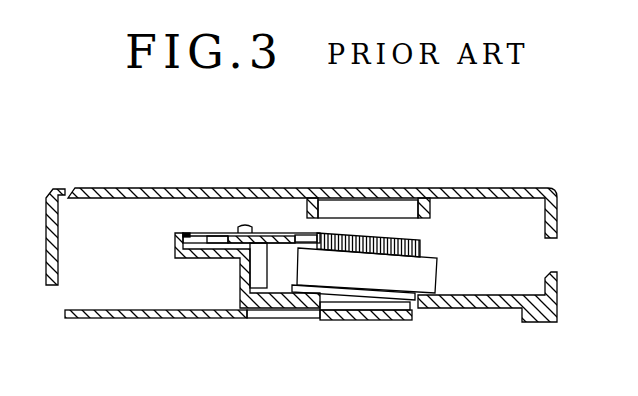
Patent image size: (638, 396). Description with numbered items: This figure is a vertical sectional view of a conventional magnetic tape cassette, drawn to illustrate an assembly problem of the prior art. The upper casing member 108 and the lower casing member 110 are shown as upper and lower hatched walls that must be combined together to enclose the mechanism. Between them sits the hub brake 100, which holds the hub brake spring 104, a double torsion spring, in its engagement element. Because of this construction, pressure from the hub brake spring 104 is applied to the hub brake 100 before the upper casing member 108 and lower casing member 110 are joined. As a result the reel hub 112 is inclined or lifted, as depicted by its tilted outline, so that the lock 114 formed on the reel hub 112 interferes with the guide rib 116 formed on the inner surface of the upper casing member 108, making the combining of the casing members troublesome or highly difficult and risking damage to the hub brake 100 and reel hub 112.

The hub brake 100 is at (277, 233).
The hub brake spring 104 is at (217, 232).
The upper casing member 108 is at (465, 188).
The lower casing member 110 is at (457, 308).
The reel hub 112 is at (430, 274).
The lock 114 is at (420, 247).
The guide rib 116 is at (423, 208).